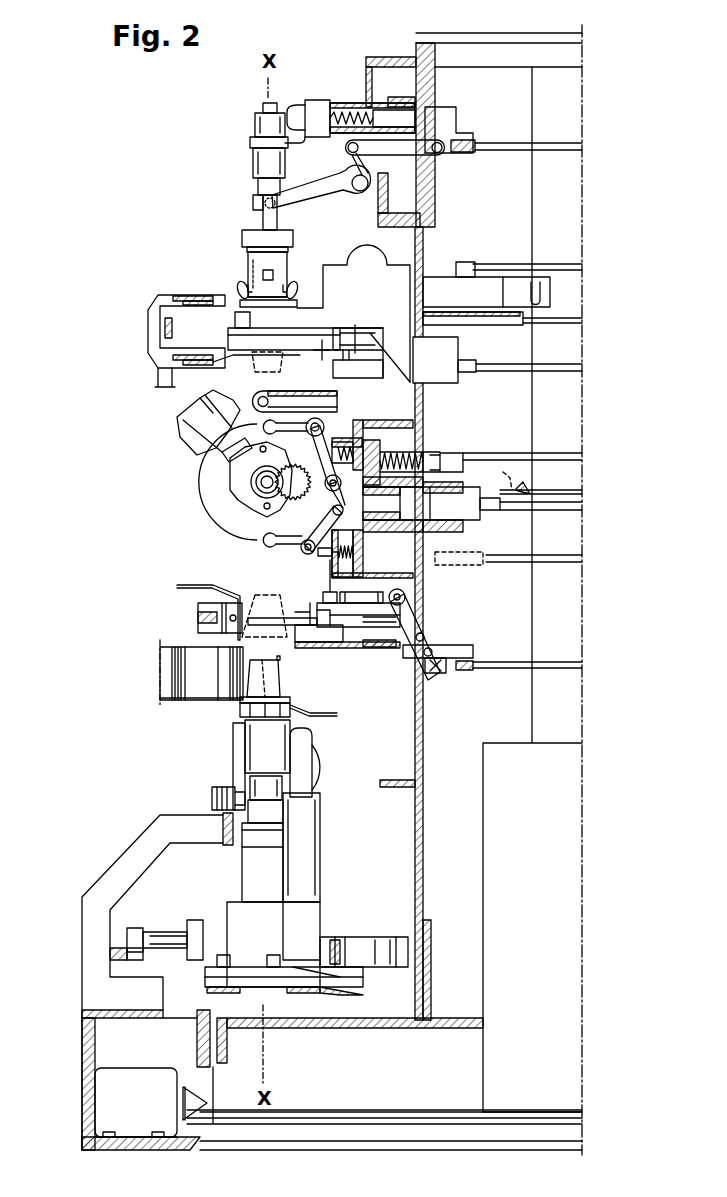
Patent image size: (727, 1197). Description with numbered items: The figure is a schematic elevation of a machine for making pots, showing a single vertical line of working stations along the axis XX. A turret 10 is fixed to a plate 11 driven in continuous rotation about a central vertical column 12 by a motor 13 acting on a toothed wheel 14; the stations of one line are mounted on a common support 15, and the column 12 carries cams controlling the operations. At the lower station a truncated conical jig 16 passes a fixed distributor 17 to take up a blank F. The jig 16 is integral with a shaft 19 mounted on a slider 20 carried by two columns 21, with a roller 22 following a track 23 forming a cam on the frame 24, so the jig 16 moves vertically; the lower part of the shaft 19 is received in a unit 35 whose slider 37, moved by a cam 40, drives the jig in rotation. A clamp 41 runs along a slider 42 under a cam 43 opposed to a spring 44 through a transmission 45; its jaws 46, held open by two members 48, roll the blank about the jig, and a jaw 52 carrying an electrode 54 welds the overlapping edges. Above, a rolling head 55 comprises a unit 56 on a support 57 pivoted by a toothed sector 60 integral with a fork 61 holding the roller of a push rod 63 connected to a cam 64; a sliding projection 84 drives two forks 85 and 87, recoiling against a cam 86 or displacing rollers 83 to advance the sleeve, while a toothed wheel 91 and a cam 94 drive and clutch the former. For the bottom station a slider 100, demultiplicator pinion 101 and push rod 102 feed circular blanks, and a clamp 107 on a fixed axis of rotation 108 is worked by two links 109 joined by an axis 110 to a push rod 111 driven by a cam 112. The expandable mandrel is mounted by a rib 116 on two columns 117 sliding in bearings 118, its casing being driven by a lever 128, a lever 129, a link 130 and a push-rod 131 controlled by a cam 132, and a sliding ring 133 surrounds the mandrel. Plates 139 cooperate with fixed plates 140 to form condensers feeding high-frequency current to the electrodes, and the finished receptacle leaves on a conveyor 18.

The turret 10 is at (423, 962).
The plate 11 is at (483, 1030).
The central vertical column 12 is at (530, 830).
The motor 13 is at (112, 1103).
The toothed wheel 14 is at (212, 1115).
The support 15 is at (418, 865).
The truncated conical jig 16 is at (268, 672).
The fixed distributor 17 is at (200, 683).
The blank F is at (175, 688).
The conveyor 18 is at (313, 403).
The shaft 19 is at (268, 810).
The slider 20 is at (300, 833).
The columns 21 is at (302, 757).
The roller 22 is at (222, 797).
The track 23 is at (227, 828).
The frame 24 is at (157, 320).
The unit 35 is at (228, 910).
The slider 37 is at (165, 937).
The cam 40 is at (118, 953).
The clamp 41 is at (317, 635).
The slider 42 is at (357, 632).
The cam 43 is at (545, 669).
The spring 44 is at (446, 670).
The transmission 45 is at (400, 604).
The jaws 46 is at (283, 620).
The members 48 is at (370, 618).
The jaw 52 is at (200, 613).
The electrode 54 is at (243, 595).
The rolling head 55 is at (190, 440).
The unit 56 is at (237, 483).
The support 57 is at (213, 503).
The toothed sector 60 is at (302, 482).
The fork 61 is at (358, 457).
The push rod 63 is at (450, 465).
The cam 64 is at (553, 459).
The rollers 83 is at (228, 445).
The sliding projection 84 is at (463, 520).
The fork 85 is at (243, 425).
The cam 86 is at (540, 507).
The fork 87 is at (302, 520).
The toothed wheel 91 is at (548, 491).
The cam 94 is at (563, 560).
The slider 100 is at (508, 322).
The demultiplicator pinion 101 is at (360, 265).
The push rod 102 is at (520, 291).
The clamp 107 is at (238, 342).
The fixed axis of rotation 108 is at (320, 352).
The links 109 is at (357, 340).
The axis 110 is at (346, 357).
The push rod 111 is at (463, 372).
The cam 112 is at (558, 368).
The rib 116 is at (250, 238).
The columns 117 is at (268, 218).
The bearings 118 is at (268, 185).
The lever 128 is at (257, 203).
The lever 129 is at (350, 195).
The link 130 is at (411, 147).
The push-rod 131 is at (441, 122).
The cam 132 is at (563, 145).
The sliding ring 133 is at (258, 260).
The plates 139 is at (320, 713).
The fixed plates 140 is at (192, 293).